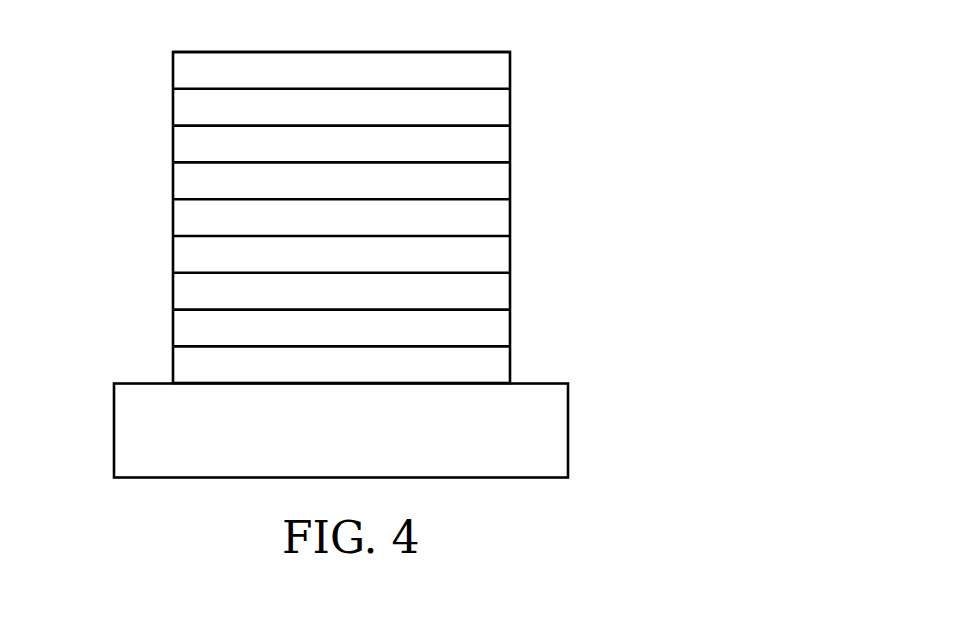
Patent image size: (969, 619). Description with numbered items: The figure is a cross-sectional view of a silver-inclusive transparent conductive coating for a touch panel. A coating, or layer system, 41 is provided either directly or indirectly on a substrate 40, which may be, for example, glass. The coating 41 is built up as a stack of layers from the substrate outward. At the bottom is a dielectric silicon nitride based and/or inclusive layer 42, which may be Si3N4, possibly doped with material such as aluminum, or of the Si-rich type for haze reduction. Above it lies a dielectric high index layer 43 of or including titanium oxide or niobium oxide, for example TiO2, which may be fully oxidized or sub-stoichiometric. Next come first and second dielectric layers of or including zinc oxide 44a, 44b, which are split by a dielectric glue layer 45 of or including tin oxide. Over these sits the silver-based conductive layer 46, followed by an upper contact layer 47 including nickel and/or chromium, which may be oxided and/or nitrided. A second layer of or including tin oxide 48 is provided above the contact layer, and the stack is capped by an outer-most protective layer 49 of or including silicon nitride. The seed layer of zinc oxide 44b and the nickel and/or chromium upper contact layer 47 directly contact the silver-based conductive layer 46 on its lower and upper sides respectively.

The substrate 40 is at (568, 430).
The coating 41 is at (92, 53).
The bottom dielectric silicon nitride based layer 42 is at (510, 364).
The dielectric high index layer 43 is at (510, 328).
The first dielectric layer of zinc oxide 44a is at (510, 291).
The second dielectric layer of zinc oxide 44b is at (510, 217).
The dielectric glue layer 45 is at (510, 254).
The silver-based conductive layer 46 is at (510, 180).
The upper contact layer 47 is at (510, 143).
The second layer of tin oxide 48 is at (510, 106).
The outer-most protective layer 49 is at (510, 69).